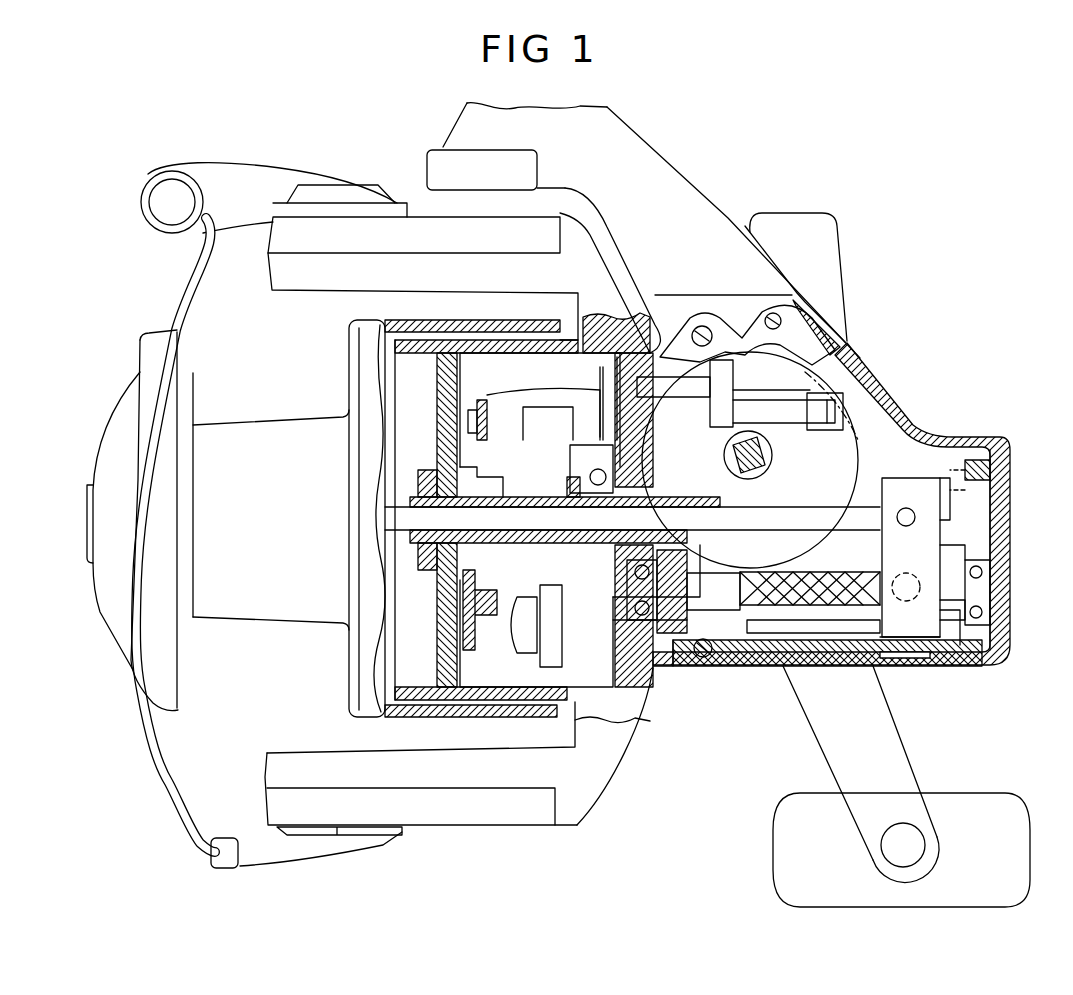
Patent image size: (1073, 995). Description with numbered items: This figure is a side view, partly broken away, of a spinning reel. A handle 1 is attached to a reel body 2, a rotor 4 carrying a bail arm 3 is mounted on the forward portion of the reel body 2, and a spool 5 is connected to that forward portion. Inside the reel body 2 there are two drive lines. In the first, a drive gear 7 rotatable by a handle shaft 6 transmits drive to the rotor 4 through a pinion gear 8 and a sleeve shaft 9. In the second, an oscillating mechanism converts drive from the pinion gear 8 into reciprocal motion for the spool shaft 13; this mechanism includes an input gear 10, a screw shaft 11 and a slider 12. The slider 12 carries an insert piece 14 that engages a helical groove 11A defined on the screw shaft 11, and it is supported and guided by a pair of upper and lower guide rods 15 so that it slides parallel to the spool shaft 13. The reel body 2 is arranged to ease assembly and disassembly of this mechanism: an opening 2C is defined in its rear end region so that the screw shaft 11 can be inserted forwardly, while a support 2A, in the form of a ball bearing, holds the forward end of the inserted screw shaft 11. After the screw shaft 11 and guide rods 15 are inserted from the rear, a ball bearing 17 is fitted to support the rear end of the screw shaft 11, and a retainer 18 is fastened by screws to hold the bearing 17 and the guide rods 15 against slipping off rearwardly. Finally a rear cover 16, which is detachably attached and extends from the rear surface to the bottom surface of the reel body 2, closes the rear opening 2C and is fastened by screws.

The handle 1 is at (830, 762).
The reel body 2 is at (863, 373).
The support 2A is at (633, 613).
The opening 2C is at (950, 563).
The bail arm 3 is at (183, 318).
The rotor 4 is at (593, 793).
The spool 5 is at (260, 607).
The handle shaft 6 is at (775, 452).
The drive gear 7 is at (850, 437).
The pinion gear 8 is at (660, 493).
The sleeve shaft 9 is at (540, 487).
The input gear 10 is at (677, 627).
The screw shaft 11 is at (730, 597).
The helical groove 11A is at (847, 610).
The slider 12 is at (933, 630).
The spool shaft 13 is at (398, 520).
The insert piece 14 is at (878, 557).
The guide rods 15 is at (818, 545).
The rear cover 16 is at (1010, 605).
The ball bearing 17 is at (976, 640).
The retainer 18 is at (1000, 498).